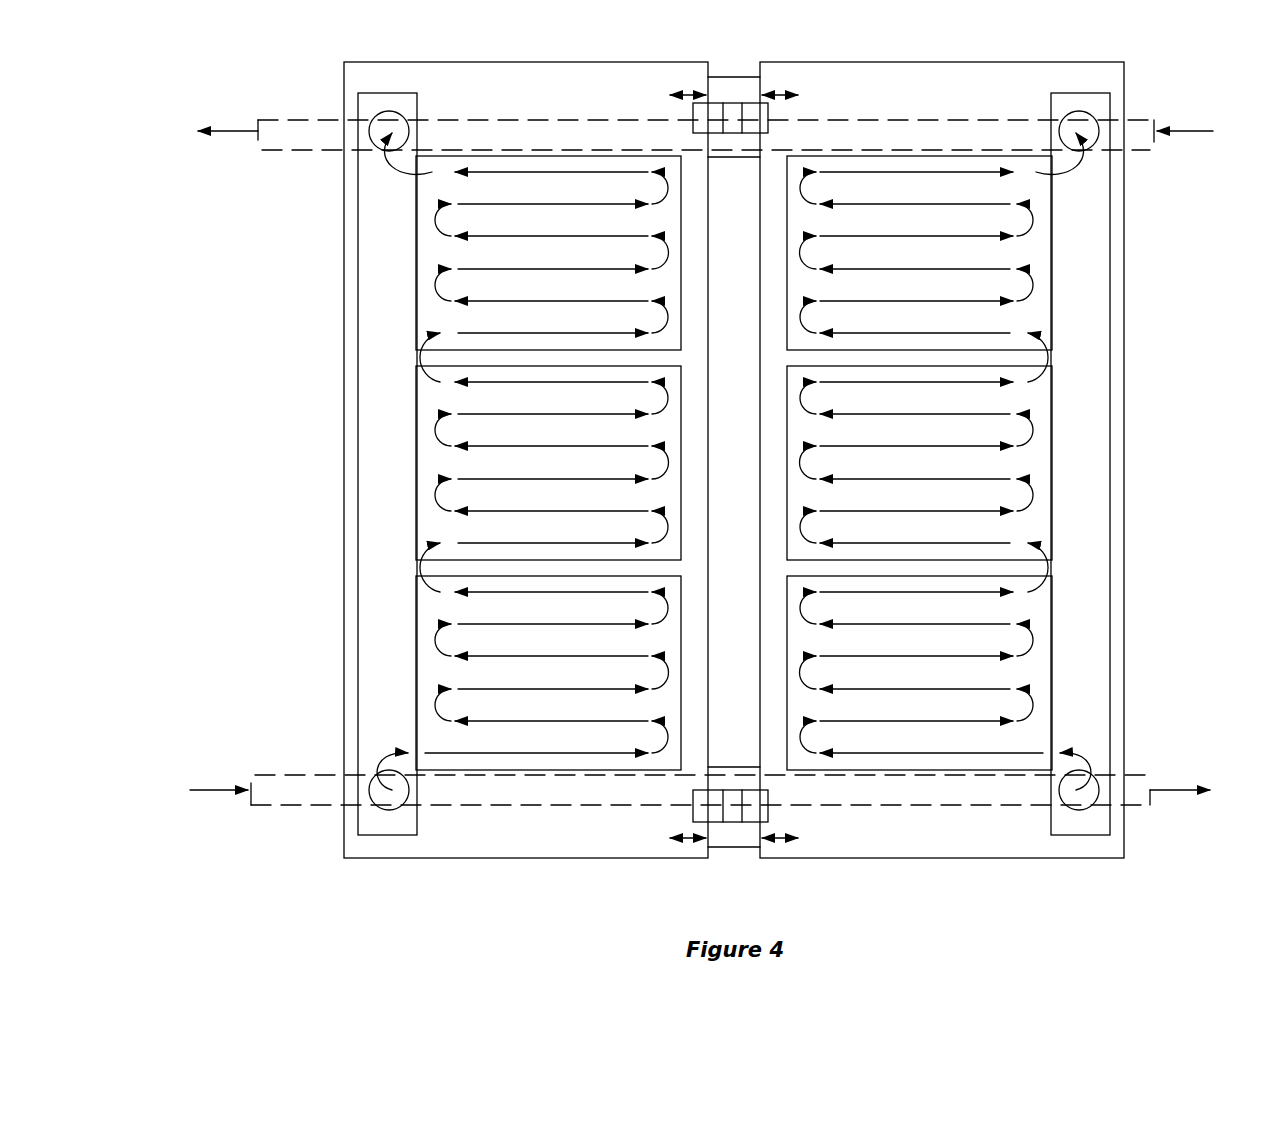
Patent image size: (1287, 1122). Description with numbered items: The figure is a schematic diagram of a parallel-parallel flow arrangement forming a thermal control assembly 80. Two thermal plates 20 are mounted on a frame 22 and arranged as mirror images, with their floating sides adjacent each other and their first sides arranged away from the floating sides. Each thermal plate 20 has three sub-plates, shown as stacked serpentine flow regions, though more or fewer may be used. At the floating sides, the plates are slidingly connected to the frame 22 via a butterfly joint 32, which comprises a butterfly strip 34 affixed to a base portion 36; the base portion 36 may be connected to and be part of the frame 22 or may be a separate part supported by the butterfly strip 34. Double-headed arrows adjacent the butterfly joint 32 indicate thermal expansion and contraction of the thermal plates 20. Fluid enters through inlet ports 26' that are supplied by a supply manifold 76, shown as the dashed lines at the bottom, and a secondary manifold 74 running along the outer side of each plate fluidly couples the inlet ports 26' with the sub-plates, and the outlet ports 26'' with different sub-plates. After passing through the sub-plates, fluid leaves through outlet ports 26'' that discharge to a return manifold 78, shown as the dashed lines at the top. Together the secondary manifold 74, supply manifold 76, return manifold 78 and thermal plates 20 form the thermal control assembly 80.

The thermal plate 20 is at (333, 395).
The frame 22 is at (340, 82).
The inlet ports 26' is at (735, 809).
The outlet ports 26'' is at (734, 144).
The butterfly joint 32 is at (738, 826).
The butterfly strip 34 is at (733, 790).
The base portion 36 is at (720, 848).
The secondary manifold 74 is at (358, 540).
The supply manifold 76 is at (270, 773).
The return manifold 78 is at (270, 152).
The thermal control assembly 80 is at (272, 458).